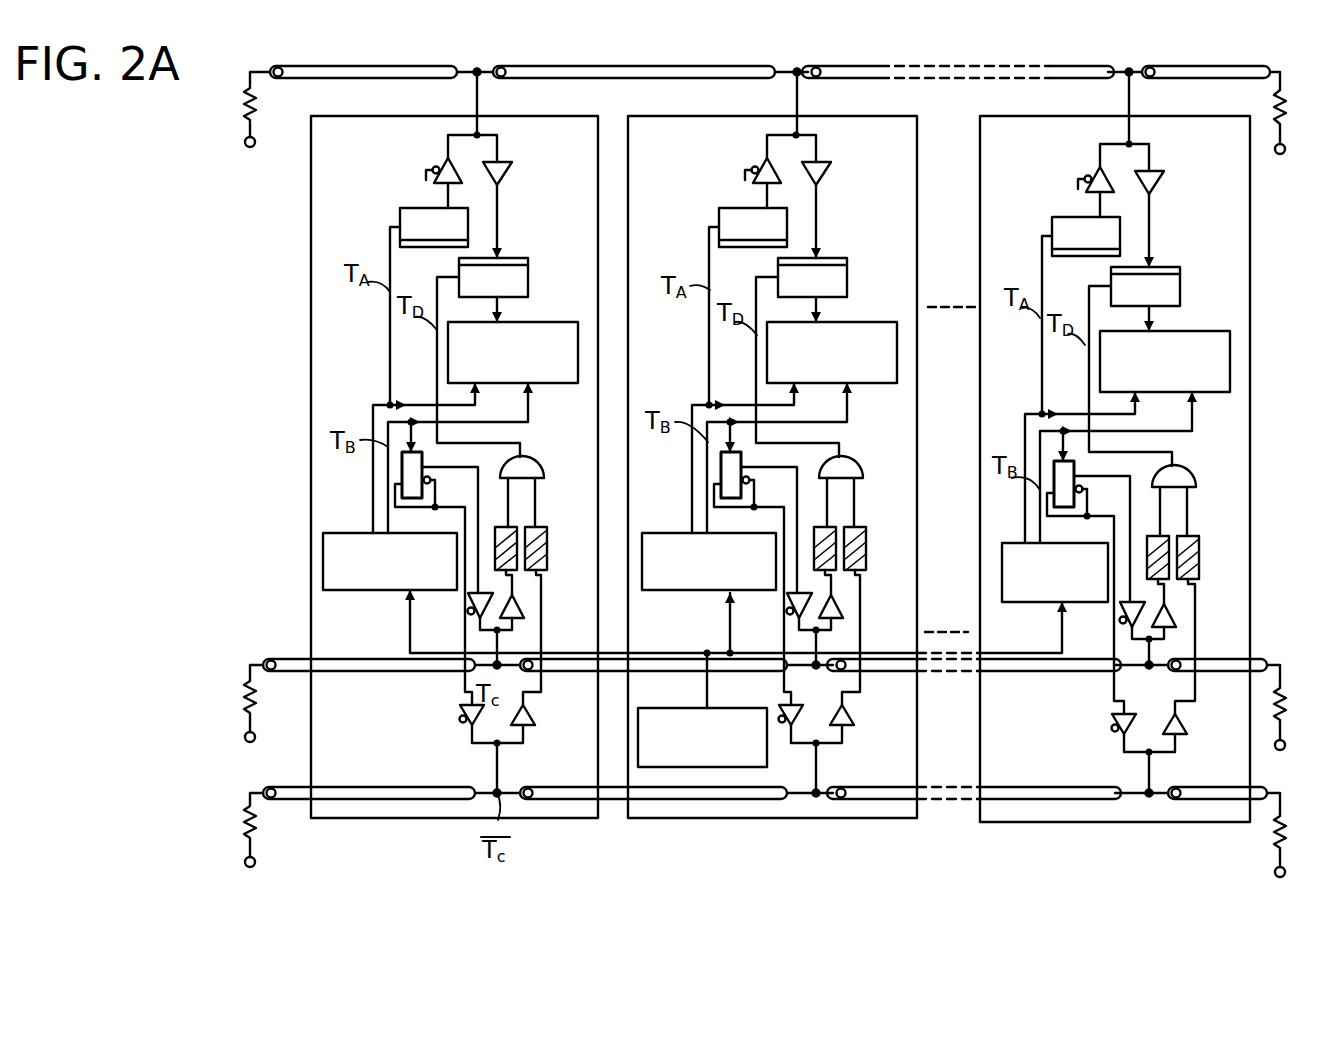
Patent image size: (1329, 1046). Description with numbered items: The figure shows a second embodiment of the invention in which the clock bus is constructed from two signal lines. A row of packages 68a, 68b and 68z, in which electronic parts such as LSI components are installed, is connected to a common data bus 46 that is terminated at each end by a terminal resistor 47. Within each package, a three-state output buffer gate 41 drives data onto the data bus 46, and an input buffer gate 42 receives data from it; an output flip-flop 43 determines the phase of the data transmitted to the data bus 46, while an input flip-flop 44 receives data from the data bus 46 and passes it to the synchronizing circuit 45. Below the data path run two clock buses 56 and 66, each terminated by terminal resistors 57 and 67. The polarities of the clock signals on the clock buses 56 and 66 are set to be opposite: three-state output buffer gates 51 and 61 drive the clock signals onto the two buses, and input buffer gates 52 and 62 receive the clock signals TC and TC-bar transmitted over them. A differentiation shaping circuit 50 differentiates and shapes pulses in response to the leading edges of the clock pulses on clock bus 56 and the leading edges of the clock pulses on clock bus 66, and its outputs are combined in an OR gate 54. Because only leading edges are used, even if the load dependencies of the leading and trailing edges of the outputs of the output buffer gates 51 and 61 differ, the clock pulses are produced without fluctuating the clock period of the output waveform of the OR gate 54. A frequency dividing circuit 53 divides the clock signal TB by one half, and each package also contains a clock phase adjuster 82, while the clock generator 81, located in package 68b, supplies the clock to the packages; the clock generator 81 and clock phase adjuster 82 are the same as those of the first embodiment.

The 3-state output buffer gate 41 is at (1095, 172).
The input buffer gate 42 is at (1162, 180).
The output flip-flop 43 is at (1060, 218).
The input flip-flop 44 is at (1170, 268).
The synchronizing circuit 45 is at (1208, 332).
The data bus 46 is at (689, 80).
The terminal resistor 47 is at (258, 103).
The differentiation shaping circuit 50 is at (1200, 536).
The 3-state output buffer gate 51 is at (1120, 610).
The input buffer gate 52 is at (1178, 620).
The frequency dividing circuit 53 is at (1060, 490).
The OR gate 54 is at (1197, 467).
The clock bus 56 is at (885, 672).
The terminal resistor 57 is at (252, 707).
The 3-state output buffer gate 61 is at (1113, 733).
The input buffer gate 62 is at (1190, 722).
The clock bus 66 is at (860, 801).
The terminal resistor 67 is at (253, 833).
The package 68a is at (525, 818).
The package 68b is at (813, 818).
The package 68z is at (1090, 822).
The clock generator 81 is at (683, 708).
The clock phase adjuster 82 is at (340, 533).